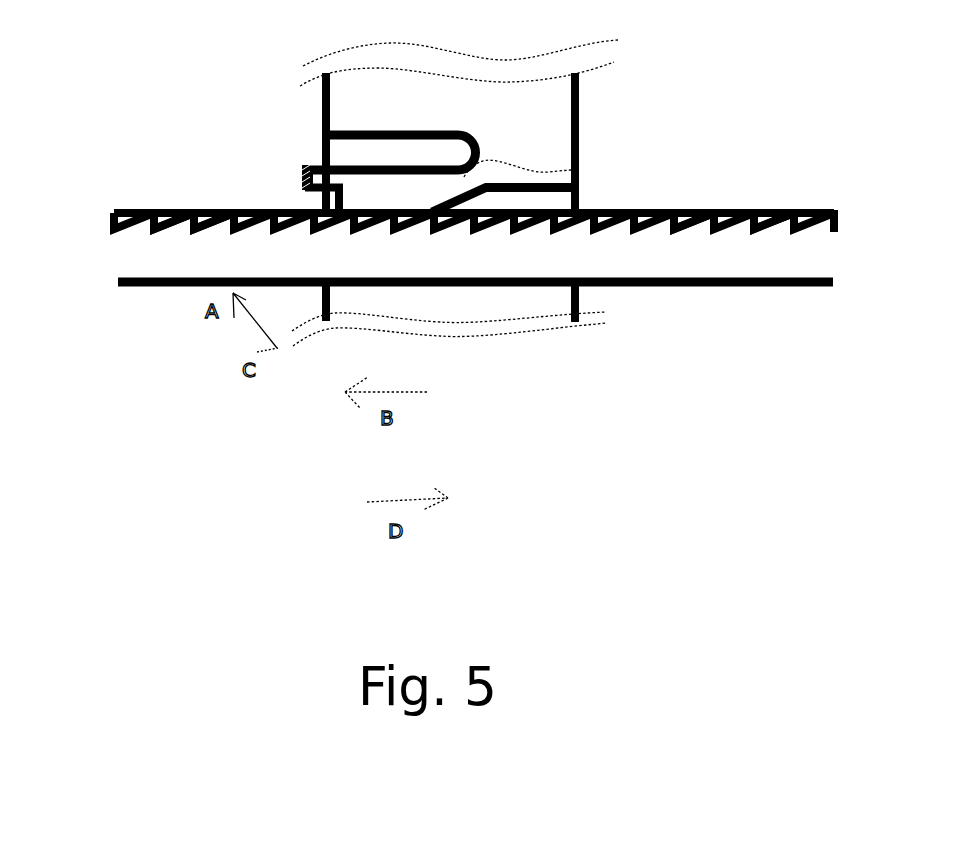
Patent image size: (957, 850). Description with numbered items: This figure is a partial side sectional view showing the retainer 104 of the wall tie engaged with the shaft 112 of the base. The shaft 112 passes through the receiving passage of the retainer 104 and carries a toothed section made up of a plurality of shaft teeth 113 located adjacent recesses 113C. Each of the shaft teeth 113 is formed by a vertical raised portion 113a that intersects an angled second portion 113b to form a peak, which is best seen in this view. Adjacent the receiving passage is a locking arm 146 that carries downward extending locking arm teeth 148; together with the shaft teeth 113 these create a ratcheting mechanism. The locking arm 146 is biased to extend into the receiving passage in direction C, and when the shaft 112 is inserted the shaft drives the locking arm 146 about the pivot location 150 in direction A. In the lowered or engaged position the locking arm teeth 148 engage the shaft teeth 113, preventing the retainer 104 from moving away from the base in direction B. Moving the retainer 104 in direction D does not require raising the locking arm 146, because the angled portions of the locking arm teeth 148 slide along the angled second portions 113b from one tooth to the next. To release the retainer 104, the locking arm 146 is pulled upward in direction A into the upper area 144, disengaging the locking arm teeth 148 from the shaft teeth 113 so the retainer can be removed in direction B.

The retainer 104 is at (578, 88).
The shaft 112 is at (707, 290).
The shaft teeth 113 is at (199, 209).
The vertical raised portion 113a is at (722, 212).
The angled second portion 113b is at (685, 210).
The recesses 113C is at (165, 208).
The upper area 144 is at (320, 147).
The locking arm 146 is at (306, 165).
The locking arm teeth 148 is at (403, 208).
The pivot location 150 is at (580, 163).